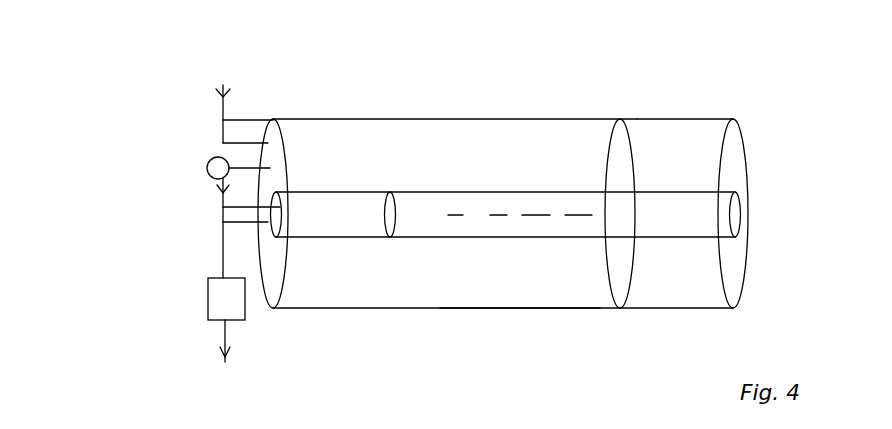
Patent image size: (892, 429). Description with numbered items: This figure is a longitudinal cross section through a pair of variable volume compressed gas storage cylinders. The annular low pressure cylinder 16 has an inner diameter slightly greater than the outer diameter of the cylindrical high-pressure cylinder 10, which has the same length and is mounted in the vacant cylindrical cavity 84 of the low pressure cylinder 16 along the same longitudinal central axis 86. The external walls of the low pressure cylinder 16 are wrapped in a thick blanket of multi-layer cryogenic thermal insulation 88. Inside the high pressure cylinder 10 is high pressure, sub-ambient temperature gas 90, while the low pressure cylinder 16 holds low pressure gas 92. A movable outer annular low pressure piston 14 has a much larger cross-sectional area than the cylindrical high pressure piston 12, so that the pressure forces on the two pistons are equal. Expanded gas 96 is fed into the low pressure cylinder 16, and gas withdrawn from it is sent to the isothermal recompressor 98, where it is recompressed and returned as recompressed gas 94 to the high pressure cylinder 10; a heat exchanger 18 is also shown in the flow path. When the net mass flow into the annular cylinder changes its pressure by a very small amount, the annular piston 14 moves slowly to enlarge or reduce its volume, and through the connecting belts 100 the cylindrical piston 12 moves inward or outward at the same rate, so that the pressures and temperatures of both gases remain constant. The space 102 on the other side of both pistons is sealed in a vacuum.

The high-pressure cylinder 10 is at (337, 200).
The high pressure piston 12 is at (387, 202).
The low pressure piston 14 is at (612, 268).
The low pressure cylinder 16 is at (402, 127).
The heat exchanger 18 is at (218, 323).
The cylindrical cavity 84 is at (655, 198).
The longitudinal central axis 86 is at (460, 213).
The multi-layer cryogenic thermal insulation 88 is at (338, 119).
The gas inside the high pressure cylinder 90 is at (353, 223).
The gas inside the low-pressure cylinder 92 is at (525, 130).
The recompressed gas 94 is at (222, 208).
The expanded gas 96 is at (220, 121).
The isothermal recompressor 98 is at (207, 175).
The connecting belts 100 is at (580, 118).
The space 102 is at (703, 140).